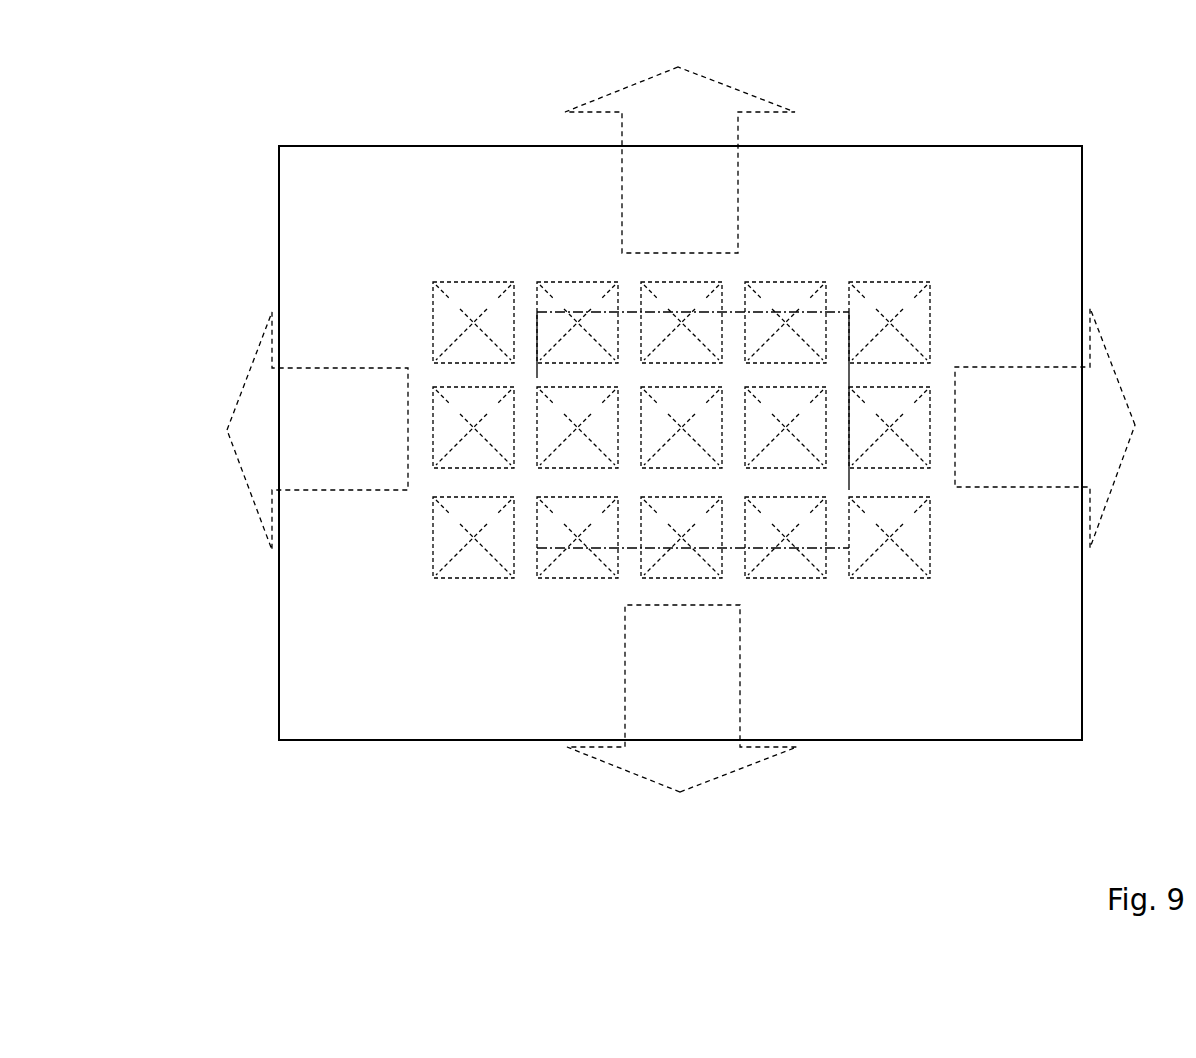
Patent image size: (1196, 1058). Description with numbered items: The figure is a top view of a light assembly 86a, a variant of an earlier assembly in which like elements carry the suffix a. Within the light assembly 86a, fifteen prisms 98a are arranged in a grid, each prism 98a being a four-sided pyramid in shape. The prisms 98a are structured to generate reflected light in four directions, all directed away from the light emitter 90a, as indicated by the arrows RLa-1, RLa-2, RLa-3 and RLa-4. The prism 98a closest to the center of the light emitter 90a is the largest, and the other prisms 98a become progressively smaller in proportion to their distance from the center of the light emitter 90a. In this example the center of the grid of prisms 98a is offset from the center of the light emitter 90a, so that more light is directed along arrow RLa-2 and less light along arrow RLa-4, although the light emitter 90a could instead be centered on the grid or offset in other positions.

The light assembly 86a is at (110, 778).
The light emitter 90a is at (628, 529).
The prism 98a is at (681, 430).
The arrow RLa-1 (reflected light direction) RLa-1 is at (711, 97).
The arrow RLa-2 (reflected light direction) RLa-2 is at (1008, 465).
The arrow RLa-3 (reflected light direction) RLa-3 is at (705, 752).
The arrow RLa-4 (reflected light direction) RLa-4 is at (256, 445).